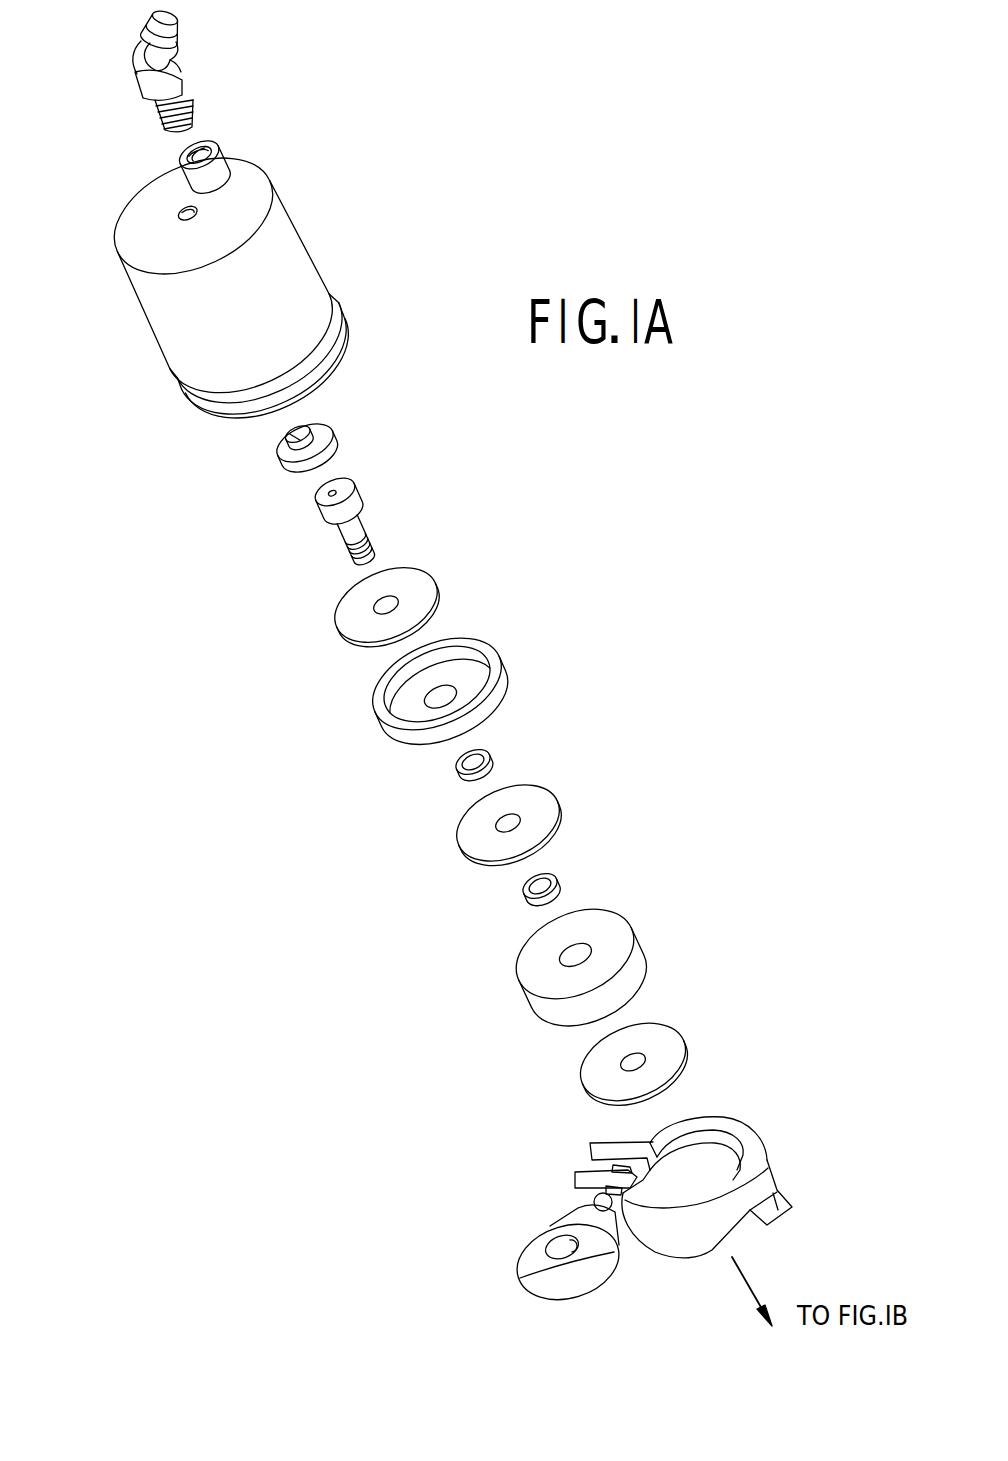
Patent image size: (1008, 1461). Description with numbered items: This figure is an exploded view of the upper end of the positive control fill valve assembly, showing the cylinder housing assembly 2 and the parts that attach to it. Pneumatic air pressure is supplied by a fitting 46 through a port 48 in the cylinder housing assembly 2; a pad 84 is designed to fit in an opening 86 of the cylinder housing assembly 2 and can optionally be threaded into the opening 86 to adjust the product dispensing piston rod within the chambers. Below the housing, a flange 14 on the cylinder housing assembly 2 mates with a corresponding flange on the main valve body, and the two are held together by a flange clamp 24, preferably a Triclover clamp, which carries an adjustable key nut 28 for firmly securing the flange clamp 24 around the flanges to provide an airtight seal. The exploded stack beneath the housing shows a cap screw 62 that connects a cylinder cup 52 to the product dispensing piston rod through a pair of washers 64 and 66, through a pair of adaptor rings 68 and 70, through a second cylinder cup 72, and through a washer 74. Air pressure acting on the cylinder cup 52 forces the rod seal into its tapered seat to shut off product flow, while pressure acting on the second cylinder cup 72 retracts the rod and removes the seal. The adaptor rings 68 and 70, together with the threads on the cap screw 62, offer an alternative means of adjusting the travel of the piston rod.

The cylinder housing assembly 2 is at (167, 330).
The flange 14 is at (213, 410).
The flange clamp 24 is at (790, 1190).
The adjustable key nut 28 is at (538, 1278).
The fitting 46 is at (155, 60).
The port 48 is at (210, 143).
The cylinder cup 52 is at (493, 697).
The cap screw 62 is at (347, 528).
The washer 64 is at (348, 643).
The washer 66 is at (468, 853).
The adaptor ring 68 is at (460, 773).
The adaptor ring 70 is at (553, 884).
The second cylinder cup 72 is at (528, 1002).
The washer 74 is at (593, 1088).
The pad 84 is at (332, 438).
The opening 86 is at (185, 210).